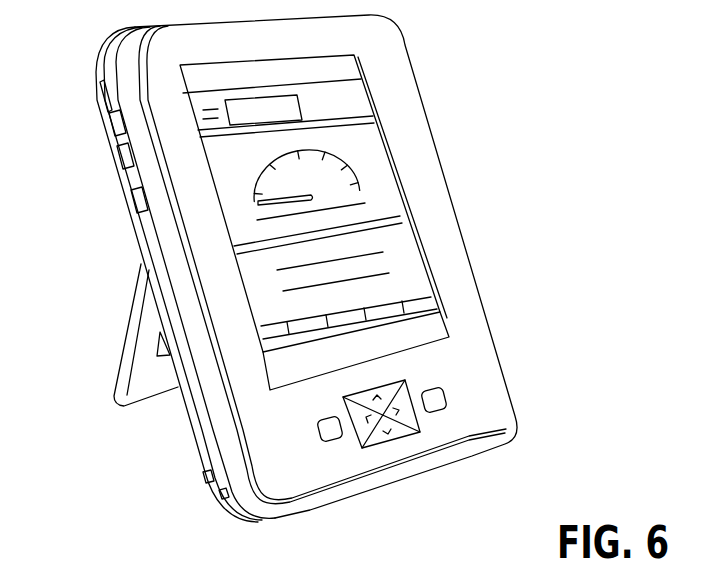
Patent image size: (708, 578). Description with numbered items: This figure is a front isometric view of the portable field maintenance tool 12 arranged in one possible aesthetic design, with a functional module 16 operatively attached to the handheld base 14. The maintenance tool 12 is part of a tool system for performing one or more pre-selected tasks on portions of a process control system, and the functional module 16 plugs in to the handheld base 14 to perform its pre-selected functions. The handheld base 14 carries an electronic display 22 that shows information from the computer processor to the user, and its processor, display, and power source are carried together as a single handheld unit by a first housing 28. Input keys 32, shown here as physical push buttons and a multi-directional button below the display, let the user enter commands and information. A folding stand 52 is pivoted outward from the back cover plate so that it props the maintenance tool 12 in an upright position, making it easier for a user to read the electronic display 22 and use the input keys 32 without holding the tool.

The maintenance tool 12 is at (321, 277).
The handheld base 14 is at (450, 199).
The functional module 16 is at (99, 71).
The electronic display 22 is at (358, 152).
The first housing 28 is at (495, 404).
The input keys 32 is at (437, 413).
The folding stand 52 is at (127, 339).